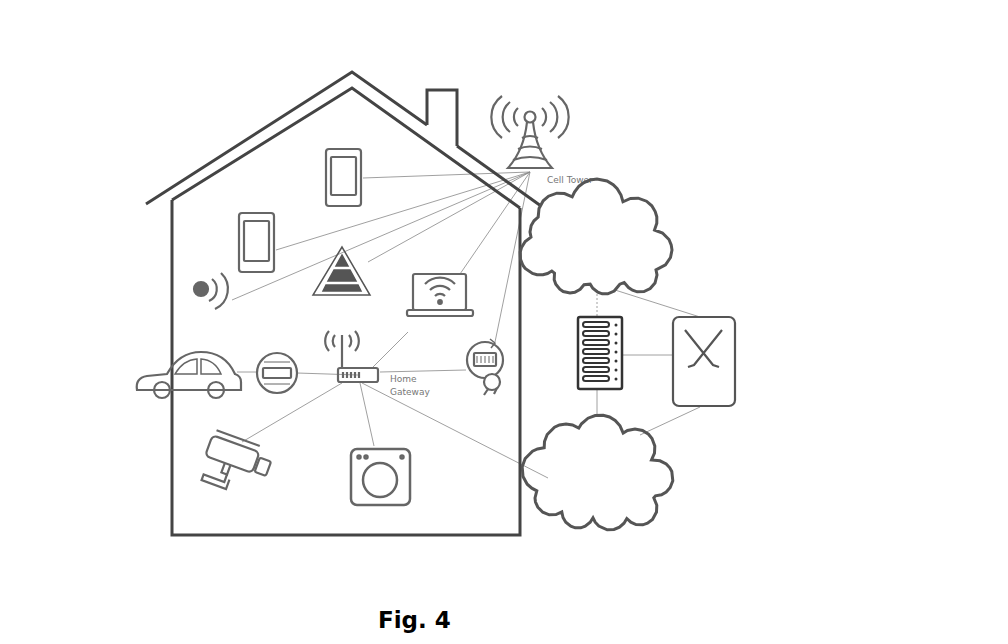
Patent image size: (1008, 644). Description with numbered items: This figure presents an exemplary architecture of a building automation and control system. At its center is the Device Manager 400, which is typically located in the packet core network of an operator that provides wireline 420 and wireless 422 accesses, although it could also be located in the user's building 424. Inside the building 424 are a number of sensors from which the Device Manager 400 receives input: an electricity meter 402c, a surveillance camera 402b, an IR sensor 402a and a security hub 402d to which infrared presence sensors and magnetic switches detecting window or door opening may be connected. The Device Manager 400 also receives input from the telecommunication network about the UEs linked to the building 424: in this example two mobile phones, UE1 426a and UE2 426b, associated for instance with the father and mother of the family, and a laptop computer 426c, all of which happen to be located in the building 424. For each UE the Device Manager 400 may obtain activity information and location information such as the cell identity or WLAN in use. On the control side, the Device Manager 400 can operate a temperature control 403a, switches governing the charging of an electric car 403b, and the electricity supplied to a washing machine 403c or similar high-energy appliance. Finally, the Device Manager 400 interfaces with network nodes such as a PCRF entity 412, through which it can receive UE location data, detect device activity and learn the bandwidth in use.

The Device Manager 400 is at (669, 325).
The PCRF entity 412 is at (757, 356).
The wireline access 420 is at (633, 481).
The wireless access 422 is at (628, 215).
The building 424 is at (343, 300).
The UE1 (mobile phone) 426a is at (313, 124).
The UE2 (mobile phone) 426b is at (174, 229).
The laptop computer 426c is at (460, 285).
The IR sensor 402a is at (151, 285).
The surveillance camera 402b is at (186, 472).
The electricity meter 402c is at (185, 352).
The security hub 402d is at (239, 212).
The temperature control 403a is at (471, 419).
The electric car 403b is at (130, 377).
The washing machine 403c is at (357, 517).